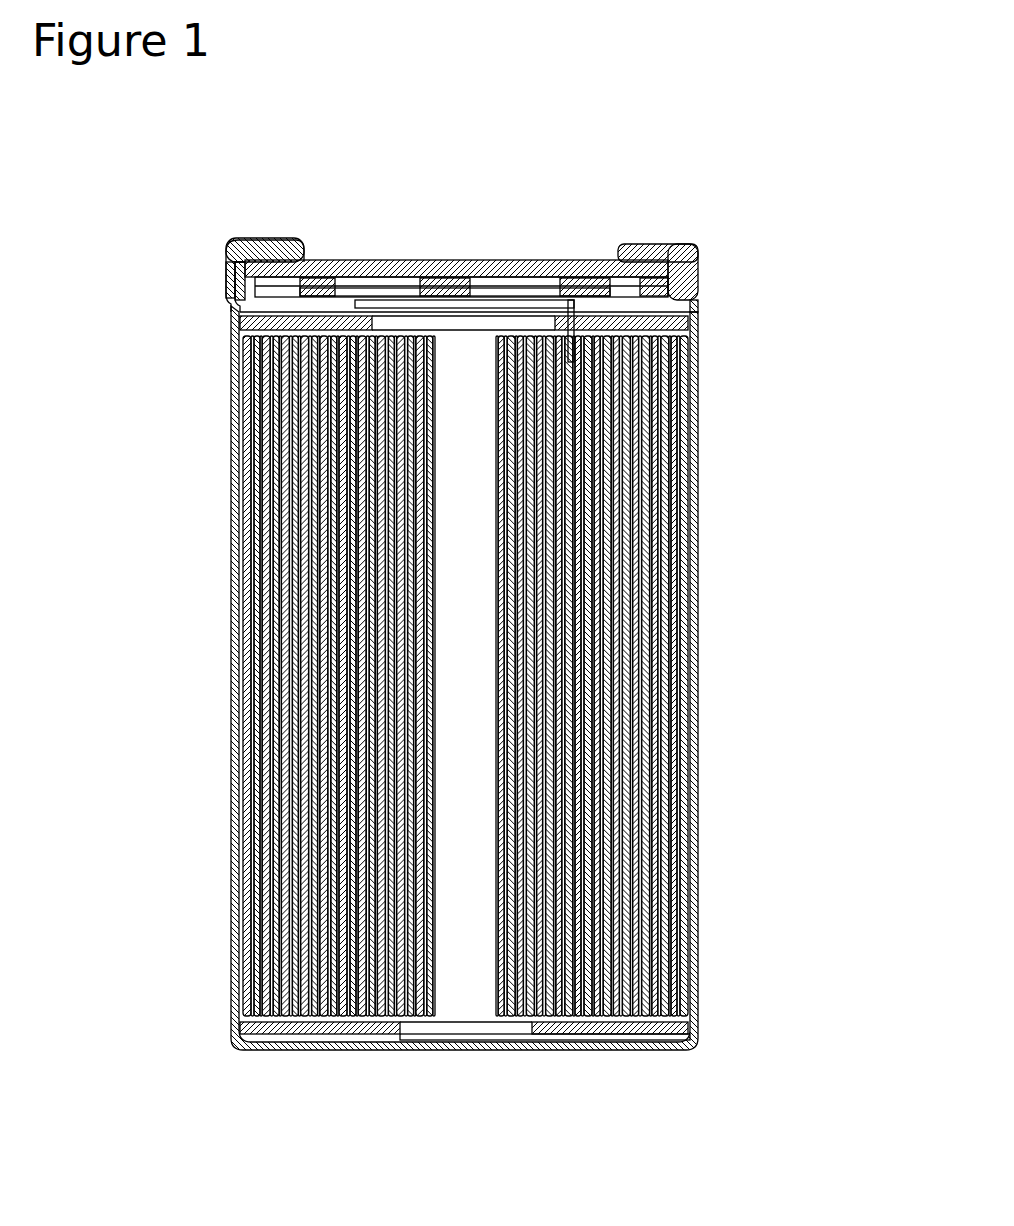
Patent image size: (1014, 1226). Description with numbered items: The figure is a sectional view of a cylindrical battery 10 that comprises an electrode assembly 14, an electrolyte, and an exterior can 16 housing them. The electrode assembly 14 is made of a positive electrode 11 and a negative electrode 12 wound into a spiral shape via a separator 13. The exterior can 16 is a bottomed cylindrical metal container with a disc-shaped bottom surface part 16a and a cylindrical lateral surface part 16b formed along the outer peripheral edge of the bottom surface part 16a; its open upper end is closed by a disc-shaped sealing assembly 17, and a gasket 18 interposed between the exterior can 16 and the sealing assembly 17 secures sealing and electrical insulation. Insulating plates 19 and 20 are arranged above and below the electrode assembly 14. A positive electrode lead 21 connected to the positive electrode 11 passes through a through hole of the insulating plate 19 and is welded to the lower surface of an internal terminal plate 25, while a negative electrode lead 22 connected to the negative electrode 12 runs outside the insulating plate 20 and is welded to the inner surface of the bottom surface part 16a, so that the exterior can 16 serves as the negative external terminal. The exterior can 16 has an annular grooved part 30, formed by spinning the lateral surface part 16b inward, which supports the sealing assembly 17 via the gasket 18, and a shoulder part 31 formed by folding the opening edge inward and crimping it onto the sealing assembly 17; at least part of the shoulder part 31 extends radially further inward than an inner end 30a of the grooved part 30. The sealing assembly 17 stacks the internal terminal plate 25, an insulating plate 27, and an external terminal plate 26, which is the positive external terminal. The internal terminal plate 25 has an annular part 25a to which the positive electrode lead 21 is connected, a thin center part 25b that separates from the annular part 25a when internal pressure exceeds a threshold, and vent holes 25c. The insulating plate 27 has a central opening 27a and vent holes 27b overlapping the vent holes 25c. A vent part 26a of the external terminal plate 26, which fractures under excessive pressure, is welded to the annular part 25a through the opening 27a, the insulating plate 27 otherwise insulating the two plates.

The cylindrical battery 10 is at (712, 106).
The positive electrode 11 is at (670, 578).
The negative electrode 12 is at (680, 612).
The separator 13 is at (770, 562).
The electrode assembly 14 is at (528, 676).
The exterior can 16 is at (513, 714).
The bottom surface part 16a is at (535, 1050).
The lateral surface part 16b is at (698, 430).
The sealing assembly 17 is at (630, 262).
The gasket 18 is at (670, 245).
The insulating plate 19 is at (238, 323).
The insulating plate 20 is at (690, 1028).
The positive electrode lead 21 is at (440, 300).
The negative electrode lead 22 is at (455, 1041).
The internal terminal plate 25 is at (454, 244).
The annular part 25a is at (403, 290).
The thin center part 25b is at (462, 290).
The vent holes 25c is at (550, 290).
The external terminal plate 26 is at (502, 219).
The vent part 26a is at (360, 262).
The insulating plate 27 is at (507, 233).
The opening 27a is at (508, 290).
The vent holes 27b is at (590, 292).
The grooved part 30 is at (230, 241).
The inner end 30a is at (283, 280).
The shoulder part 31 is at (253, 240).